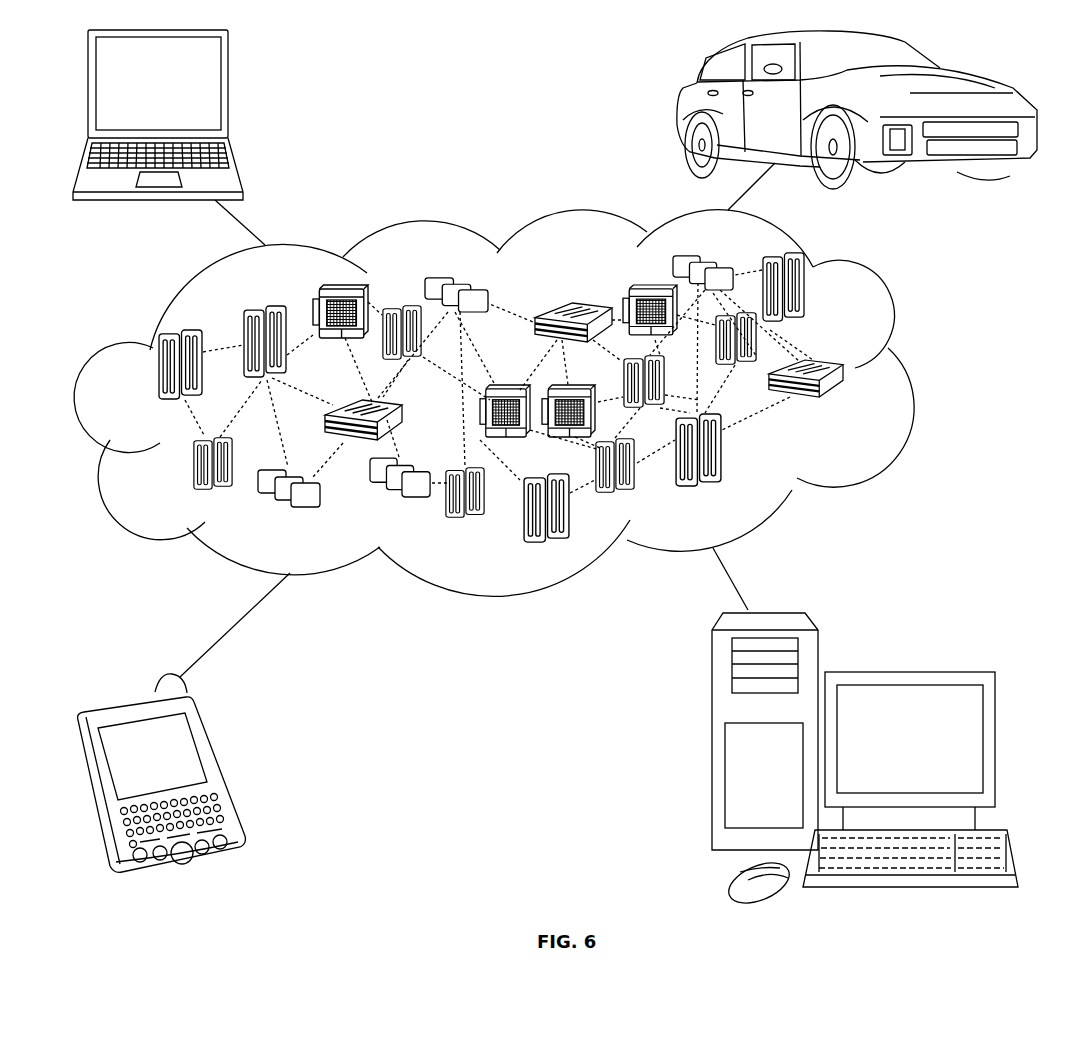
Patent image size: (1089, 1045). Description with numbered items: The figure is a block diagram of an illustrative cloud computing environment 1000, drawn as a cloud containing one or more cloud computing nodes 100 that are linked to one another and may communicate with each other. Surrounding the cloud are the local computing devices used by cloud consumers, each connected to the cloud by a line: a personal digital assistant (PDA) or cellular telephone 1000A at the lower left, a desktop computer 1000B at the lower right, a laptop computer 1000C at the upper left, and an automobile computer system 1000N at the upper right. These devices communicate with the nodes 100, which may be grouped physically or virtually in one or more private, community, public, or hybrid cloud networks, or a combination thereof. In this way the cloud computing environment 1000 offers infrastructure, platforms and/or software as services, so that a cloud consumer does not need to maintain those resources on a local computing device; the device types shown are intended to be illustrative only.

The laptop computer 1000C is at (230, 95).
The automobile computer system 1000N is at (678, 110).
The cloud computing environment 1000 is at (907, 375).
The cloud computing nodes 100 is at (847, 405).
The personal digital assistant (PDA) or cellular telephone 1000A is at (223, 770).
The desktop computer 1000B is at (907, 670).